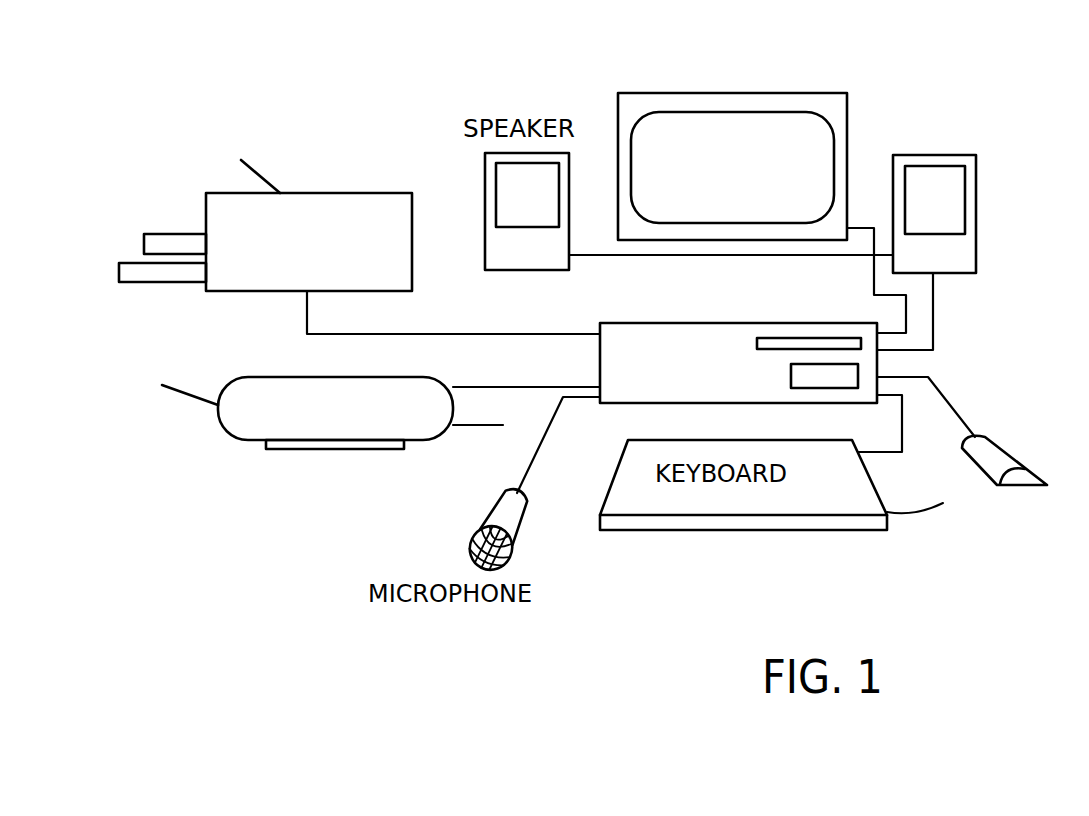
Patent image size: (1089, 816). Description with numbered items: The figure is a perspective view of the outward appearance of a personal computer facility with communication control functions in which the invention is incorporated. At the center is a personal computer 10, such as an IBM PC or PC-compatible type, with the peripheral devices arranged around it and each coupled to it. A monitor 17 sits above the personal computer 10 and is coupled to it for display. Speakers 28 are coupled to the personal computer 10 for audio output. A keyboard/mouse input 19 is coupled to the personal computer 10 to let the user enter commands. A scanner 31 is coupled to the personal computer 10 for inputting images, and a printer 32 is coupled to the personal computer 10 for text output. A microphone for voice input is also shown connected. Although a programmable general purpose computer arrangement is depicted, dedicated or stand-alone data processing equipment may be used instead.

The personal computer 10 is at (617, 403).
The monitor 17 is at (792, 93).
The keyboard/mouse input 19 is at (962, 457).
The speakers 28 is at (930, 157).
The scanner 31 is at (230, 437).
The printer 32 is at (339, 193).